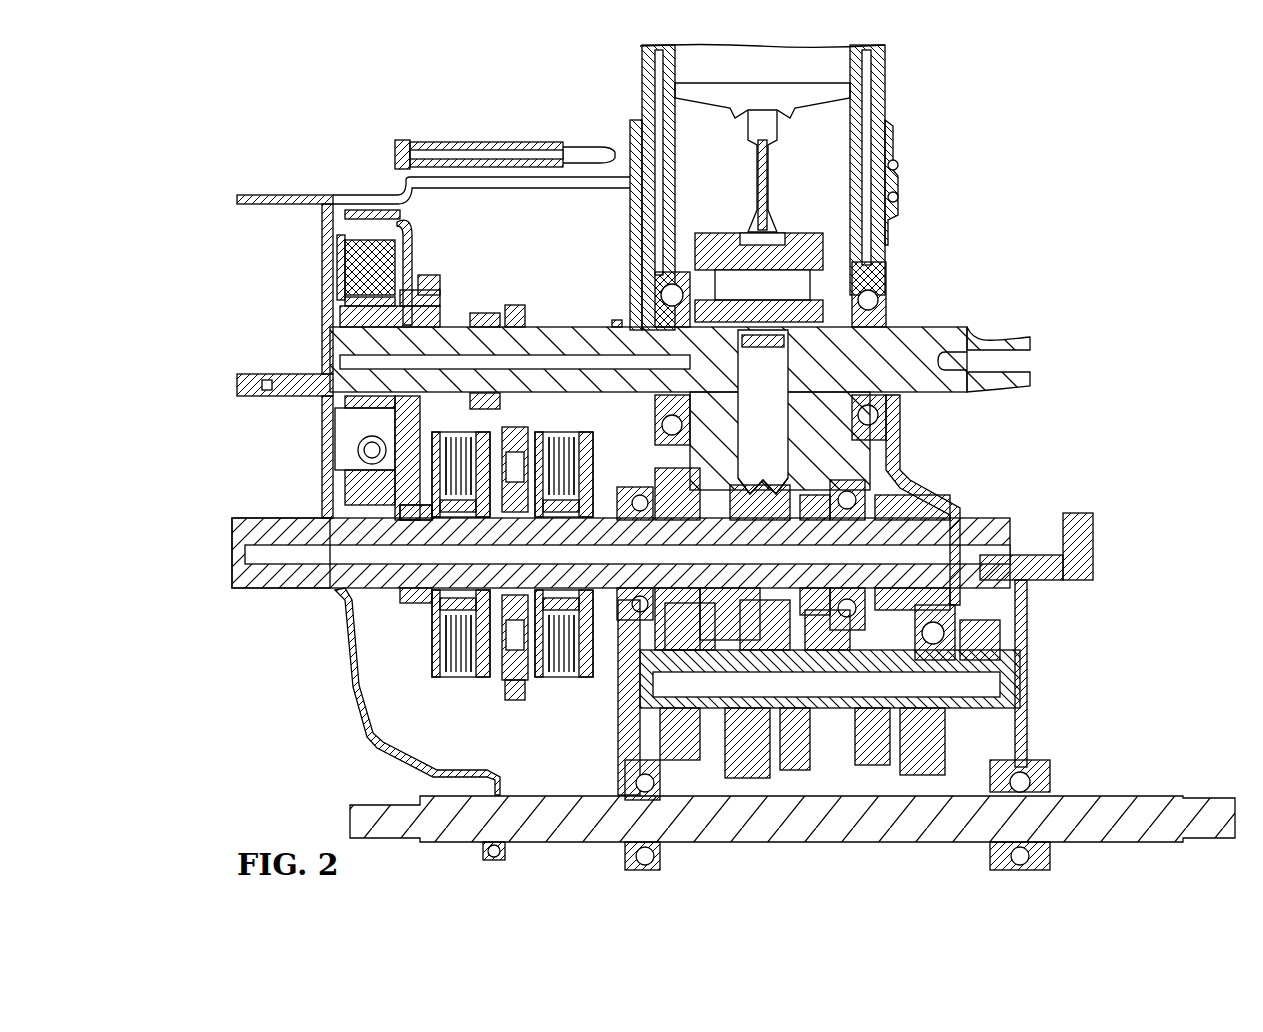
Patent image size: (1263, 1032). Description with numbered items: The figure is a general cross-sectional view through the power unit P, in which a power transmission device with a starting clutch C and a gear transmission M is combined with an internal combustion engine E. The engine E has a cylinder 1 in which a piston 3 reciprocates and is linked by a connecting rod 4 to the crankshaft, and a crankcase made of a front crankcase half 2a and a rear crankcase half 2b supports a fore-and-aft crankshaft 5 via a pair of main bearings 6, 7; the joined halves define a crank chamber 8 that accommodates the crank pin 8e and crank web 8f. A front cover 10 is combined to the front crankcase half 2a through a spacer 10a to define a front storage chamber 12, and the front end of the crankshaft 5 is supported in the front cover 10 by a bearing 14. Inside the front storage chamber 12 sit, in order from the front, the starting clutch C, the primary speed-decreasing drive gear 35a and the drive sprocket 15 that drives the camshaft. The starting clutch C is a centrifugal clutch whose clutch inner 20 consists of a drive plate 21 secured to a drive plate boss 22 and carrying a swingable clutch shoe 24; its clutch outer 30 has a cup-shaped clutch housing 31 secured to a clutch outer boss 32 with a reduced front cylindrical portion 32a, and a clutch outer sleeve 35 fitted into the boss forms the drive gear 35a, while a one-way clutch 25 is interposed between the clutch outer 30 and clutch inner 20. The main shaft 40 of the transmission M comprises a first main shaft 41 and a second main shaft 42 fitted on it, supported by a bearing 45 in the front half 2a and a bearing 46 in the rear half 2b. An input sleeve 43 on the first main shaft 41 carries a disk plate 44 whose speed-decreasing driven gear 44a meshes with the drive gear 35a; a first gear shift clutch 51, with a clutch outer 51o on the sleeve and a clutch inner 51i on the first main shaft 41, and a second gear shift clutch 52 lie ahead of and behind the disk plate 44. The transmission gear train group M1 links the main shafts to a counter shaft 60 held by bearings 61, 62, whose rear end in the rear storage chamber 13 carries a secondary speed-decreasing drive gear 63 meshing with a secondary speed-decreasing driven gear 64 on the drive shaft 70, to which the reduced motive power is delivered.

The cylinder 1 is at (638, 118).
The front crankcase half 2a is at (640, 202).
The rear crankcase half 2b is at (895, 226).
The piston 3 is at (824, 88).
The connecting rod 4 is at (780, 170).
The crankshaft 5 is at (582, 328).
The main bearing 6 is at (676, 275).
The main bearing 7 is at (860, 270).
The crank chamber 8 is at (749, 418).
The crank pin 8e is at (760, 348).
The crank web 8f is at (763, 494).
The front cover 10 is at (320, 352).
The spacer 10a is at (520, 141).
The front storage chamber 12 is at (536, 235).
The rear storage chamber 13 is at (919, 248).
The bearing 14 is at (325, 397).
The drive sprocket 15 is at (617, 320).
The clutch inner 20 is at (322, 255).
The drive plate 21 is at (392, 234).
The drive plate boss 22 is at (370, 310).
The clutch shoe 24 is at (332, 234).
The one-way clutch 25 is at (436, 298).
The clutch outer 30 is at (436, 234).
The clutch housing 31 is at (396, 214).
The clutch outer boss 32 is at (440, 318).
The front cylindrical portion 32a is at (445, 425).
The clutch outer sleeve 35 is at (485, 313).
The primary speed-decreasing drive gear 35a is at (518, 305).
The main shaft 40 is at (524, 523).
The first main shaft 41 is at (420, 600).
The second main shaft 42 is at (660, 490).
The input sleeve 43 is at (478, 680).
The disk plate 44 is at (530, 456).
The speed-decreasing driven gear 44a is at (515, 700).
The bearing 45 is at (622, 498).
The bearing 46 is at (950, 506).
The first gear shift clutch 51 is at (452, 696).
The clutch inner 51i is at (432, 640).
The clutch outer 51o is at (440, 680).
The second gear shift clutch 52 is at (558, 700).
The counter shaft 60 is at (892, 708).
The bearing 61 is at (625, 740).
The bearing 62 is at (945, 630).
The secondary speed-decreasing drive gear 63 is at (1030, 626).
The secondary speed-decreasing driven gear 64 is at (1040, 762).
The drive shaft 70 is at (605, 830).
The starting clutch C is at (364, 198).
The internal combustion engine E is at (933, 140).
The power unit P is at (265, 465).
The gear transmission M is at (375, 686).
The transmission gear train group M1 is at (811, 787).